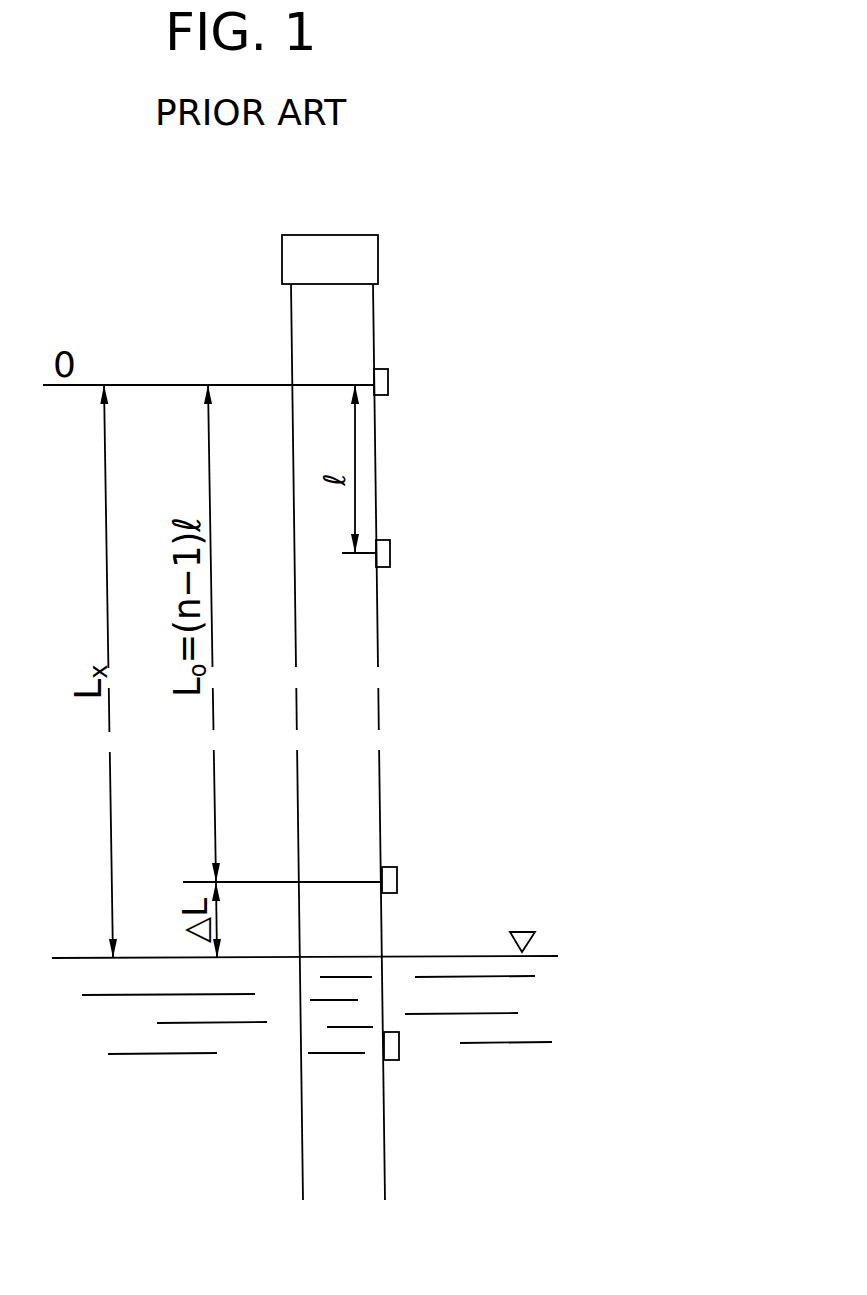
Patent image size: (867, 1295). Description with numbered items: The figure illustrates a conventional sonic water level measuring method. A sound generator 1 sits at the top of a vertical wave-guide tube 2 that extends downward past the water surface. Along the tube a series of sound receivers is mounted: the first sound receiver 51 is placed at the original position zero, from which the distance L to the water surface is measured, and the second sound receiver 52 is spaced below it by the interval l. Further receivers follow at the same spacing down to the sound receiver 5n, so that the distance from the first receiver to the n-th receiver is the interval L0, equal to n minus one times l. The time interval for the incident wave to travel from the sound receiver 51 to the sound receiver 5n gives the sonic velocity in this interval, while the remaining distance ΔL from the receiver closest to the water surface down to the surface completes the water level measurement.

The sound generator 1 is at (330, 259).
The wave-guide tube 2 is at (374, 317).
The sound receiver 51 is at (388, 385).
The sound receiver 52 is at (390, 553).
The sound receiver 5n is at (397, 880).